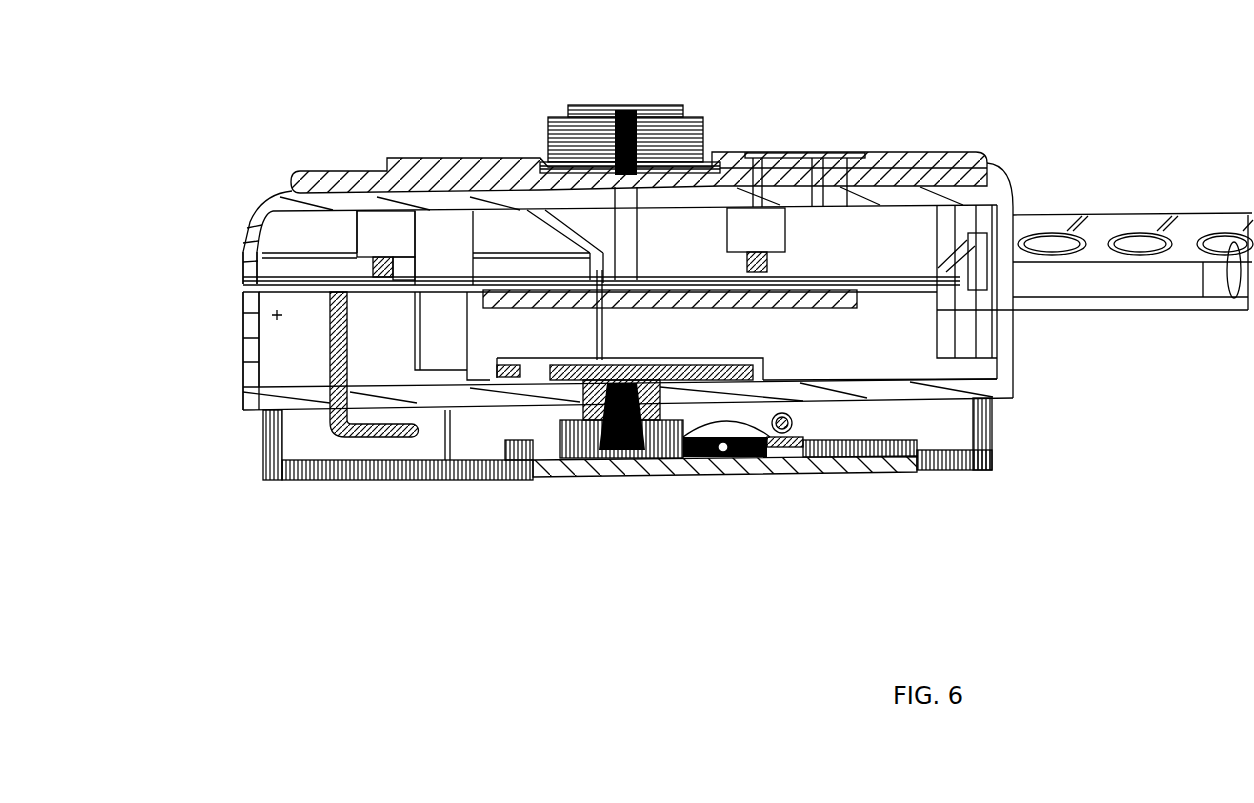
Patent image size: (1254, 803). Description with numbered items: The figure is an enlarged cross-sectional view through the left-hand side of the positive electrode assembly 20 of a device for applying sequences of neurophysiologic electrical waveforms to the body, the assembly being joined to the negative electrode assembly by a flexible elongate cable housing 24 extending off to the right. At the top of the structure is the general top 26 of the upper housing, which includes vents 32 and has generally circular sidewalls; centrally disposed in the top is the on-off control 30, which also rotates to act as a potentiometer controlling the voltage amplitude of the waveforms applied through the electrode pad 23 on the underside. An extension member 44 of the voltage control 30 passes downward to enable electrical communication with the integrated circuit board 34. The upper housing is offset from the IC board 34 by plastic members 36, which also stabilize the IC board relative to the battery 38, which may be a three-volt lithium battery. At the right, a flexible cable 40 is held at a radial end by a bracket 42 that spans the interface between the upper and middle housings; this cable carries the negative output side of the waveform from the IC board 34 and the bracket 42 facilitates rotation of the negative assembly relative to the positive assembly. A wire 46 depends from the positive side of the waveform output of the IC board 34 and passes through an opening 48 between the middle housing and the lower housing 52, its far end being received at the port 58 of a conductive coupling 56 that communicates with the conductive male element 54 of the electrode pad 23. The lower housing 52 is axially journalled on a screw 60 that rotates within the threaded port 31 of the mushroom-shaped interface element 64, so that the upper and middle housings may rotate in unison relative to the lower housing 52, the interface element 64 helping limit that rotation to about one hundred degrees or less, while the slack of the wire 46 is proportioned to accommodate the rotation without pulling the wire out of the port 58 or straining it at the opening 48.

The positive electrode assembly 20 is at (892, 127).
The electrode pad 23 is at (870, 470).
The flexible elongate cable housing 24 is at (1128, 318).
The top 26 is at (448, 155).
The on-off control 30 is at (655, 97).
The threaded port 31 is at (580, 460).
The vents 32 is at (820, 168).
The integrated circuit board 34 is at (830, 262).
The plastic members 36 is at (367, 233).
The battery 38 is at (740, 302).
The flexible cable 40 is at (883, 287).
The bracket 42 is at (985, 330).
The extension member 44 is at (628, 253).
The wire 46 is at (352, 350).
The opening 48 is at (327, 397).
The lower housing 52 is at (338, 477).
The conductive male element 54 is at (717, 457).
The conductive coupling 56 is at (743, 453).
The port 58 is at (798, 422).
The screw 60 is at (632, 440).
The interface element 64 is at (560, 372).